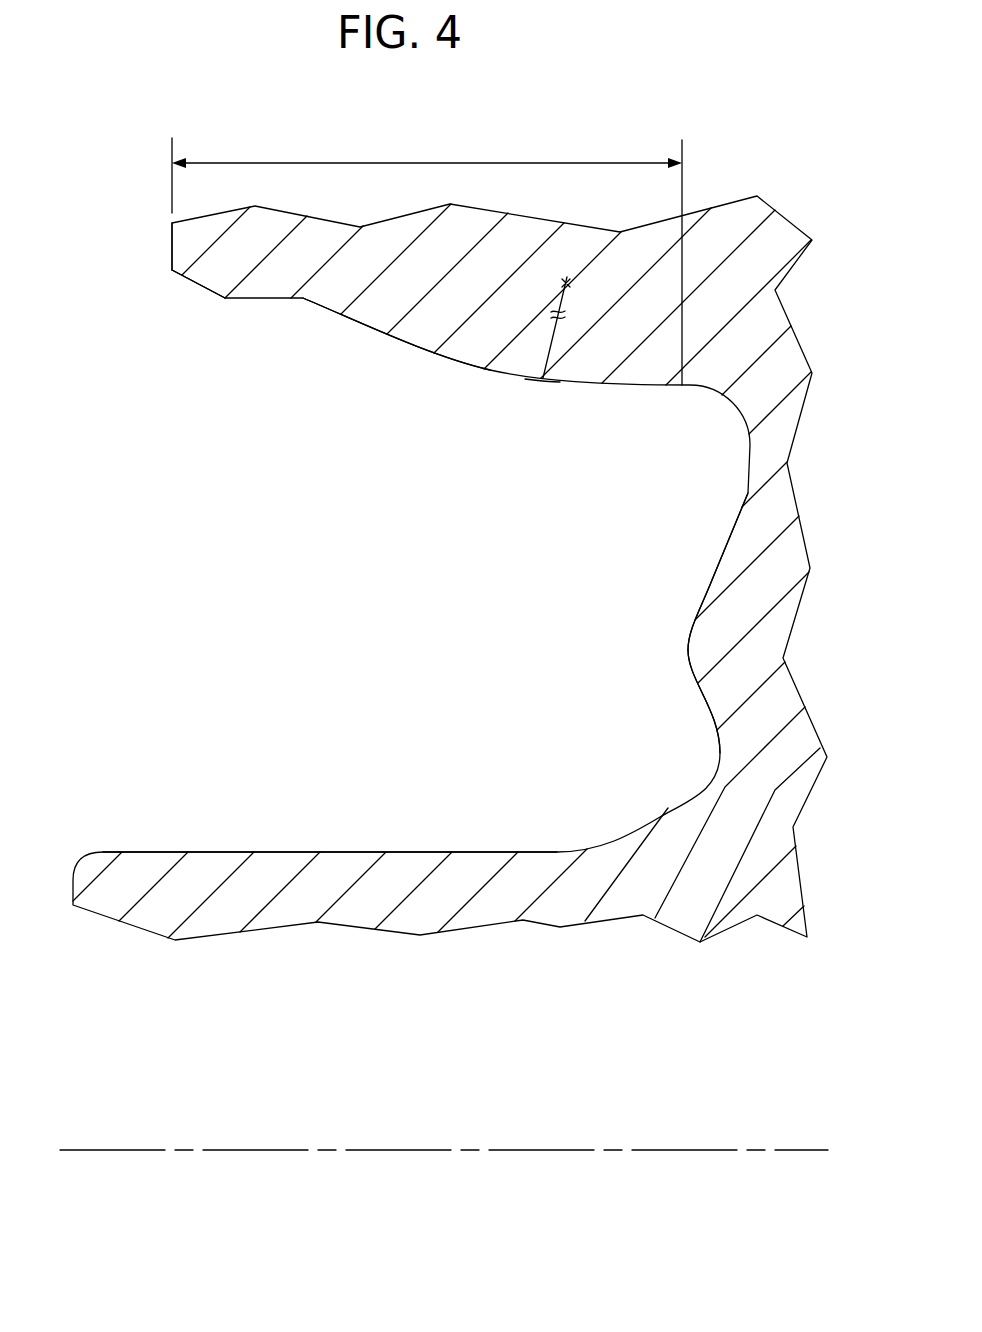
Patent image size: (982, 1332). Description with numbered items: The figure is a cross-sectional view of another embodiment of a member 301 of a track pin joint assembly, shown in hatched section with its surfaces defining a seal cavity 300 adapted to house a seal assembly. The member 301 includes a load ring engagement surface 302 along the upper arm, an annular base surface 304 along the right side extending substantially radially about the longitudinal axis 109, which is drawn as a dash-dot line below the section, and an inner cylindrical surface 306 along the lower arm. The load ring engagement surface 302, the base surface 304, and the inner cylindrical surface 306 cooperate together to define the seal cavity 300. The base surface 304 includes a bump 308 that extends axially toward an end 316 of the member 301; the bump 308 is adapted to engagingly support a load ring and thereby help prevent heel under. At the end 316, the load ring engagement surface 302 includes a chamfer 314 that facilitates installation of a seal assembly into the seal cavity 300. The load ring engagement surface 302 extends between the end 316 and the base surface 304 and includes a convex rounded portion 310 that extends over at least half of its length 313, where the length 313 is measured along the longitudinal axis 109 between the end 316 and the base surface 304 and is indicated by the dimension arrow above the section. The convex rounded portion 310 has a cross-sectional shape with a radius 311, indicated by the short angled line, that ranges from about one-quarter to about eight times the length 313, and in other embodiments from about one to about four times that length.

The longitudinal axis 109 is at (697, 1150).
The seal cavity 300 is at (367, 595).
The member 301 is at (128, 185).
The load ring engagement surface 302 is at (396, 350).
The annular base surface 304 is at (698, 586).
The inner cylindrical surface 306 is at (333, 852).
The bump 308 is at (690, 670).
The convex rounded portion 310 is at (510, 378).
The radius 311 is at (555, 346).
The length 313 is at (417, 163).
The chamfer 314 is at (194, 287).
The end 316 is at (170, 270).